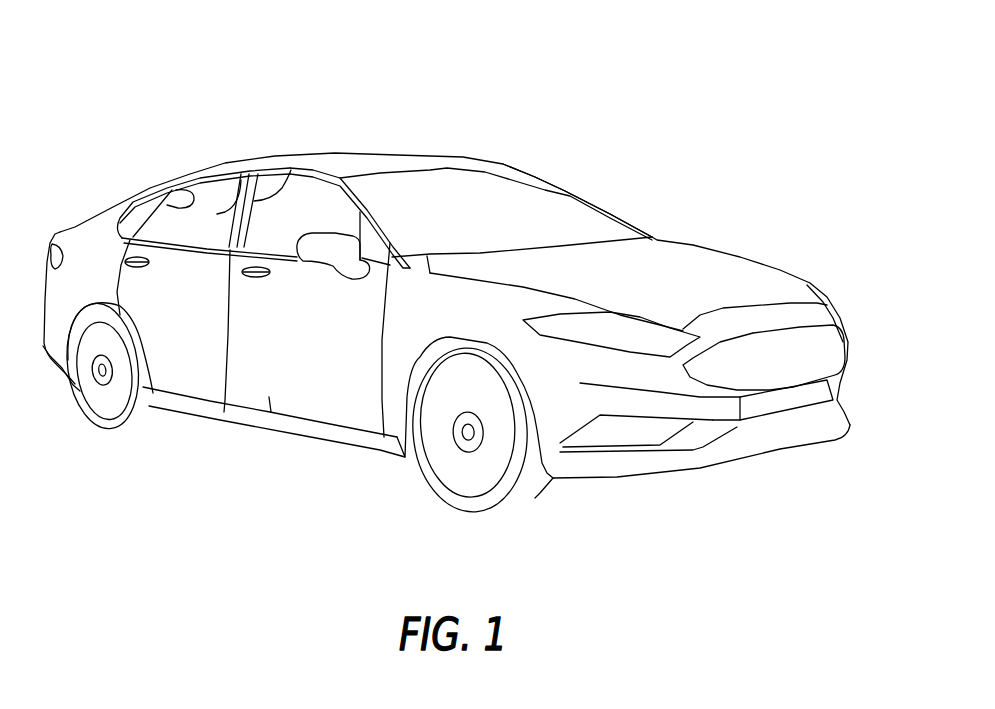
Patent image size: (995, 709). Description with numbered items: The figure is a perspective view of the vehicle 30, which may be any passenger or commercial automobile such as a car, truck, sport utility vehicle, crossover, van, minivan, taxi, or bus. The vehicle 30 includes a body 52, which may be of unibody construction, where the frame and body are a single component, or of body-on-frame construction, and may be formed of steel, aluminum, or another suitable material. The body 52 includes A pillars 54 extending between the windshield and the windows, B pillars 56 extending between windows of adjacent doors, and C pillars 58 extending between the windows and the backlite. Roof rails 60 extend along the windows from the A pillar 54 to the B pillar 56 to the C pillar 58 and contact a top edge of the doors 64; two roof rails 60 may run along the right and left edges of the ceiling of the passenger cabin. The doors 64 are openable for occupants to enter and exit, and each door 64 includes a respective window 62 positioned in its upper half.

The vehicle 30 is at (576, 132).
The body 52 is at (695, 241).
The A pillar 54 is at (386, 237).
The B pillar 56 is at (284, 188).
The C pillar 58 is at (193, 188).
The roof rail 60 is at (323, 170).
The window 62 is at (270, 256).
The door 64 is at (270, 413).